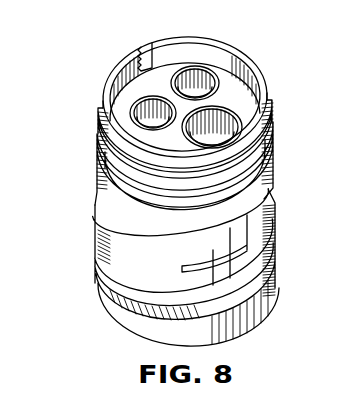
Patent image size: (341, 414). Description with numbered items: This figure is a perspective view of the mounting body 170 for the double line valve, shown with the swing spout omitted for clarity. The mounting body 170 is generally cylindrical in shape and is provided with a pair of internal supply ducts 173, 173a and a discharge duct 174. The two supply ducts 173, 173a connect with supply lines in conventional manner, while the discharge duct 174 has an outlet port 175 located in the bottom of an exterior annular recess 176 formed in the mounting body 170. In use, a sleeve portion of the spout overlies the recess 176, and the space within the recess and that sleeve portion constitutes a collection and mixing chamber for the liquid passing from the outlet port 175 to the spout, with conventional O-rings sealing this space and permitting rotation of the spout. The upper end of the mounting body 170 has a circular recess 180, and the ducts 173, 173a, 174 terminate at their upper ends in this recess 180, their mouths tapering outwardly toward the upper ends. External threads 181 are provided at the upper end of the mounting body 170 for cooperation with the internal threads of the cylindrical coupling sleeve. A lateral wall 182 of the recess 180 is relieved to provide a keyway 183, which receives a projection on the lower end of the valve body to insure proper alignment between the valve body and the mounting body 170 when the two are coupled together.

The mounting body 170 is at (169, 176).
The internal supply duct 173 is at (130, 113).
The internal supply duct 173a is at (193, 96).
The discharge duct 174 is at (268, 119).
The outlet port 175 is at (248, 260).
The exterior annular recess 176 is at (275, 232).
The circular recess 180 is at (238, 94).
The external threads 181 is at (273, 157).
The lateral wall 182 is at (188, 50).
The keyway 183 is at (143, 50).